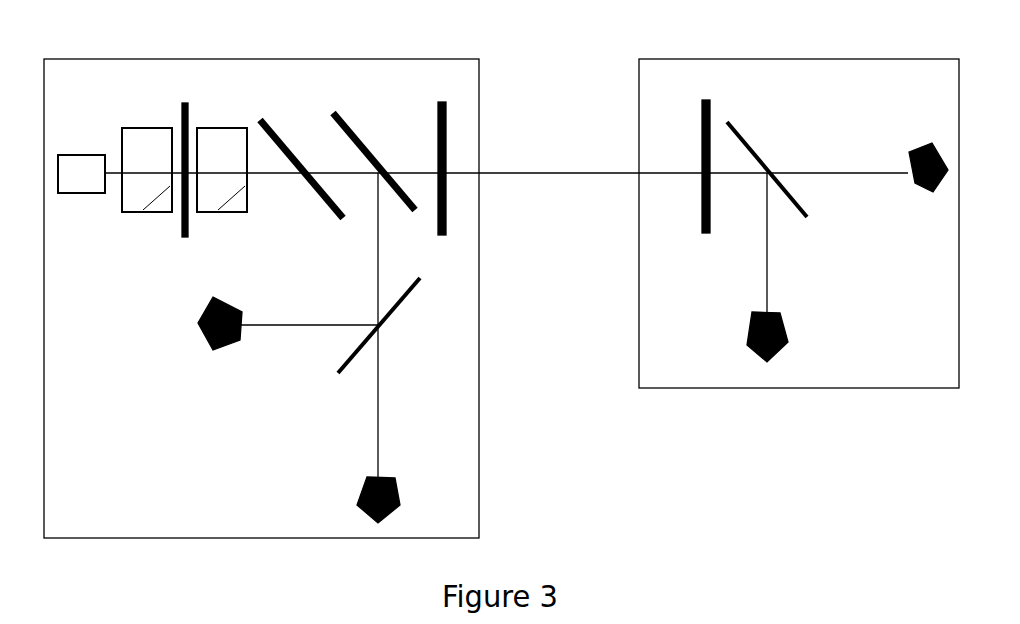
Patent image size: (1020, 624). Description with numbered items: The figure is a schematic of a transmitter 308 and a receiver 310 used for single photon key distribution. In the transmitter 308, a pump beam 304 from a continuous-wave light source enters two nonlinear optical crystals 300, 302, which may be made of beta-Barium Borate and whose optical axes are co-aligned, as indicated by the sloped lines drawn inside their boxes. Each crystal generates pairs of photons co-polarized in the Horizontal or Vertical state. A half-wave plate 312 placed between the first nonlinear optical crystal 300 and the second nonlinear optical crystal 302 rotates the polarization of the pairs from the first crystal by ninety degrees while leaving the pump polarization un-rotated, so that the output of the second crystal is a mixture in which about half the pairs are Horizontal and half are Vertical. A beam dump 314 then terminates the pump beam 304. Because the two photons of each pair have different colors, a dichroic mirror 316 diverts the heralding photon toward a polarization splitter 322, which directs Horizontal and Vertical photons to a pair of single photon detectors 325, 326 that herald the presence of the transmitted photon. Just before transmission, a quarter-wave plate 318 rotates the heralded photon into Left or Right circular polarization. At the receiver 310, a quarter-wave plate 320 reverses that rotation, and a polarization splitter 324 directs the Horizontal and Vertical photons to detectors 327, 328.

The first nonlinear optical crystal 300 is at (140, 213).
The second nonlinear optical crystal 302 is at (218, 213).
The pump beam 304 is at (72, 197).
The transmitter 308 is at (333, 60).
The receiver 310 is at (850, 59).
The half-wave plate 312 is at (180, 122).
The beam dump 314 is at (327, 215).
The dichroic mirror 316 is at (352, 125).
The quarter-wave plate 318 is at (446, 145).
The quarter-wave plate 320 is at (710, 117).
The polarization splitter 322 is at (398, 312).
The polarization splitter 324 is at (763, 155).
The single photon detector 325 is at (208, 342).
The single photon detector 326 is at (385, 477).
The detector 327 is at (790, 333).
The detector 328 is at (923, 187).